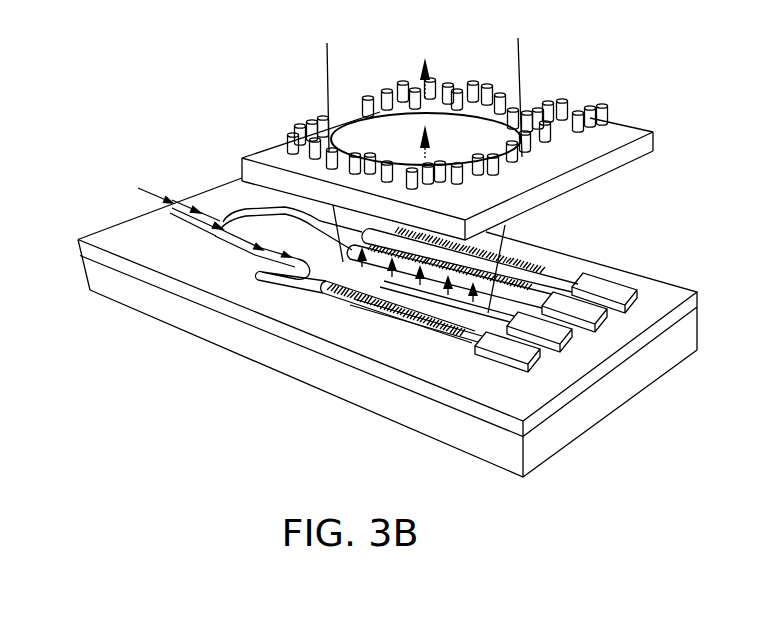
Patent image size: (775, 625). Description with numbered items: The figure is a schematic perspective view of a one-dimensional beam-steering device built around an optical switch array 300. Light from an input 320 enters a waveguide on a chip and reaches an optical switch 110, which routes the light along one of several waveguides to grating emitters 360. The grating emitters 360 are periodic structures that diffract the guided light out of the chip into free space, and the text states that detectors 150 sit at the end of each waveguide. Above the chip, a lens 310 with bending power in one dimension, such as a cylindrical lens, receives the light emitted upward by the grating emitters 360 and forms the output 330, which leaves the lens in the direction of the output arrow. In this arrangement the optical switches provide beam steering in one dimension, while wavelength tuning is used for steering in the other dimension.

The optical switch array 300 is at (4, 90).
The lens 310 is at (578, 170).
The input 320 is at (143, 172).
The output 330 is at (452, 84).
The optical switch array 110 is at (278, 248).
The grating emitters 360 is at (413, 307).
The detectors 150 is at (522, 352).